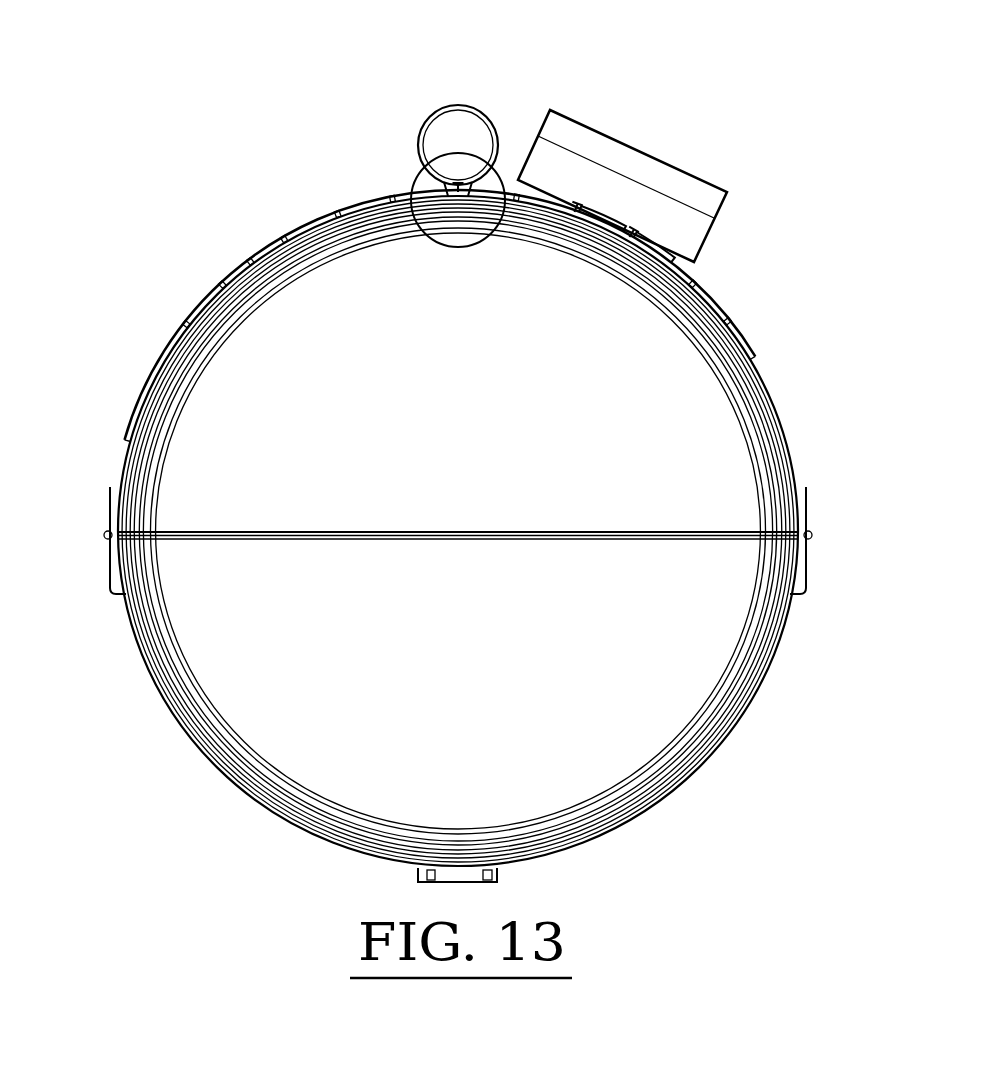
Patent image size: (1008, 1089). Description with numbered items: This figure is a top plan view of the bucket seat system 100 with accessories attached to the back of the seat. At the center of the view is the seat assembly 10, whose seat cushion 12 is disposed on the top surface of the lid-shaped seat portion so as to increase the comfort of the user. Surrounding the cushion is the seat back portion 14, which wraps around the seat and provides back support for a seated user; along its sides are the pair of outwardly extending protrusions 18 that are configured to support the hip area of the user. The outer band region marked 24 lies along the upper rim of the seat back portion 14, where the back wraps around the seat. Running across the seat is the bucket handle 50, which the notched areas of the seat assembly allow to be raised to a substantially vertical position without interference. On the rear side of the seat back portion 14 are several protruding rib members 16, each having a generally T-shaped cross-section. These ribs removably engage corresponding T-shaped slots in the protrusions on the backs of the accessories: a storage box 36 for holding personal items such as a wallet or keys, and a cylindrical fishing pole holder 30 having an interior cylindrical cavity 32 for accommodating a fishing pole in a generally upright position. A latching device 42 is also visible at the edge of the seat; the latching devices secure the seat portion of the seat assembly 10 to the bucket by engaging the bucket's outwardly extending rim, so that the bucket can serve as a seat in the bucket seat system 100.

The seat assembly 10 is at (461, 456).
The seat cushion 12 is at (200, 460).
The seat back portion 14 is at (755, 357).
The protruding rib members 16 is at (453, 207).
The outwardly extending protrusions 18 is at (112, 583).
The outer band 24 is at (190, 365).
The fishing pole holder 30 is at (482, 105).
The interior cylindrical cavity 32 is at (453, 130).
The storage box 36 is at (648, 157).
The latching devices 42 is at (470, 882).
The handle 50 is at (476, 540).
The bucket seat system 100 is at (461, 481).